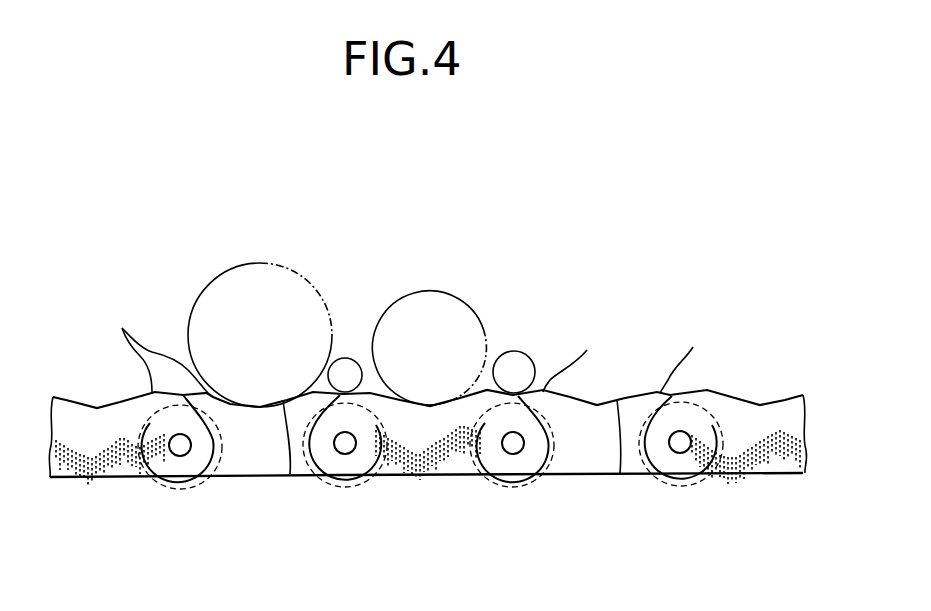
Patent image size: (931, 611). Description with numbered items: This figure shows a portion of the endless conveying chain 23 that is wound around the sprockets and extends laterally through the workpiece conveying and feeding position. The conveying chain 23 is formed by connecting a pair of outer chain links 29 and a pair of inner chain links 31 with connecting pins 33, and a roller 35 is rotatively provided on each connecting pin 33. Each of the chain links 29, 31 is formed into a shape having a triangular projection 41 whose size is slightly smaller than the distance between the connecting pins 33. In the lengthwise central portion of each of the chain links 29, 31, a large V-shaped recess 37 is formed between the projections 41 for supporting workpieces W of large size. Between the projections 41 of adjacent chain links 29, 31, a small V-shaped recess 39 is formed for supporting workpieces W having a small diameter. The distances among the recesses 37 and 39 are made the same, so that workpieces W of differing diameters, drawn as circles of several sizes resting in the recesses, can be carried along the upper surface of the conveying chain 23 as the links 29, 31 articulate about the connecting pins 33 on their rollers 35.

The conveying chain 23 is at (278, 491).
The outer chain link 29 is at (428, 473).
The inner chain link 31 is at (593, 458).
The connecting pin 33 is at (345, 455).
The roller 35 is at (177, 484).
The large V-shape recess 37 is at (290, 474).
The small V-shape recess 39 is at (371, 390).
The triangular projection 41 is at (410, 346).
The workpiece W is at (345, 358).